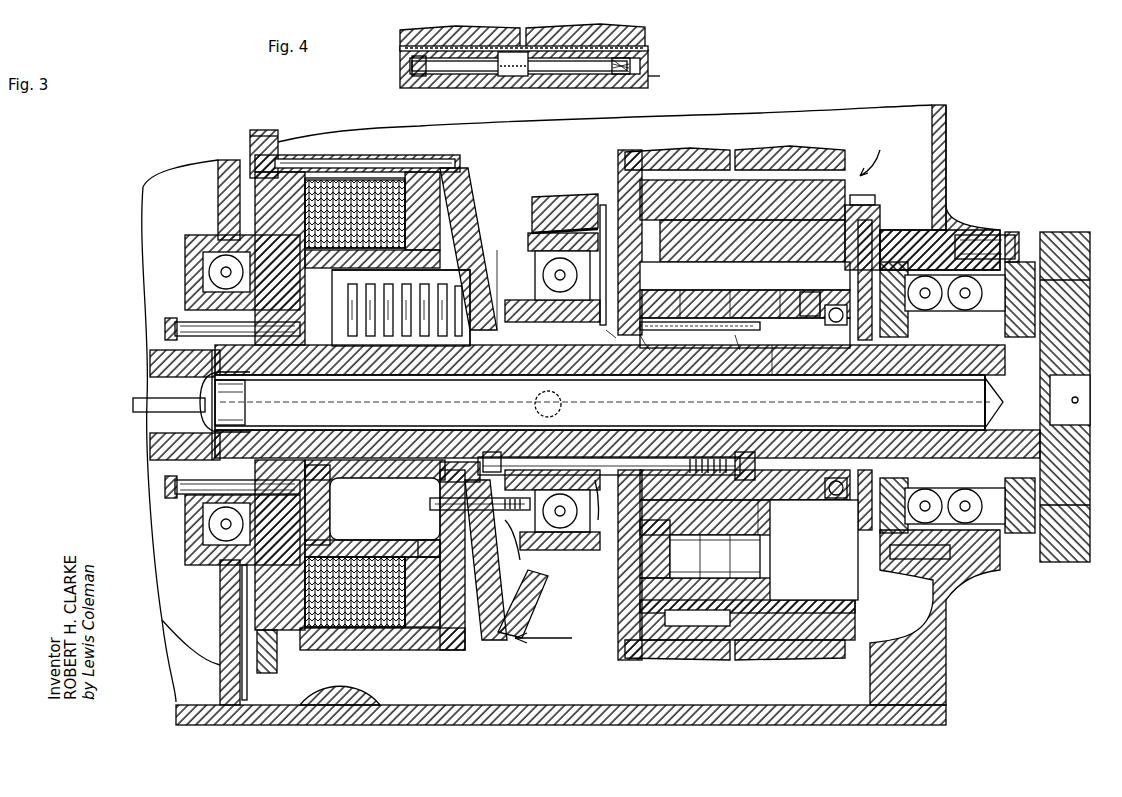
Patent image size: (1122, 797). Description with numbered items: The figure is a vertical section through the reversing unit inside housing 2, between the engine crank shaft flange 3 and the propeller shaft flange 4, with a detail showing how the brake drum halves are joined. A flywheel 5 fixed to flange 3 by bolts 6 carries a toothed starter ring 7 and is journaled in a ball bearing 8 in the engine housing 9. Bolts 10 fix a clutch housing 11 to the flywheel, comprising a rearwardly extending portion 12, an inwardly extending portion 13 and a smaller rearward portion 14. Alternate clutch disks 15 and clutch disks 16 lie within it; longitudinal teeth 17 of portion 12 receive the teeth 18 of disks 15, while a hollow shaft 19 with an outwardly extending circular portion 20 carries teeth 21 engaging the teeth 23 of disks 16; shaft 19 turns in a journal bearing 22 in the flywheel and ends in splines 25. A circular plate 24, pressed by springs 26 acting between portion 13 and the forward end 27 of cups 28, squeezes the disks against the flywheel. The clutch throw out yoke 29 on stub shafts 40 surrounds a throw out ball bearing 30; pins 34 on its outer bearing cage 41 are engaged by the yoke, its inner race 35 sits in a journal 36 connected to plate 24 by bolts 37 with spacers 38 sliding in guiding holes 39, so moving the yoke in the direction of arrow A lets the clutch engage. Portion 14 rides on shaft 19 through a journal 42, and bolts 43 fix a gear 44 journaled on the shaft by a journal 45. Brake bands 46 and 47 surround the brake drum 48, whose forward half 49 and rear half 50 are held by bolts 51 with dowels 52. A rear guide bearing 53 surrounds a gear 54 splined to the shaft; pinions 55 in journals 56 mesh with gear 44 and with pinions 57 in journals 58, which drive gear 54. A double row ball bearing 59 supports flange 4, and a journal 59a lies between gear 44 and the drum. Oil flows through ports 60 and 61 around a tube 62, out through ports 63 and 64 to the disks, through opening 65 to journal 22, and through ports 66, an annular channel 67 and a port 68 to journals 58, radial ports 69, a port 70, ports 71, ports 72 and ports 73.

In FIG. 3, the housing 2 is at (606, 724).
In FIG. 3, the crank shaft flange 3 is at (152, 455).
In FIG. 3, the propeller shaft flange 4 is at (1062, 558).
In FIG. 3, the flywheel 5 is at (290, 648).
In FIG. 3, the bolts 6 is at (168, 326).
In FIG. 3, the toothed starter ring 7 is at (266, 131).
In FIG. 3, the ball bearing 8 is at (205, 540).
In FIG. 3, the engine housing 9 is at (218, 628).
In FIG. 3, the bolts 10 is at (436, 166).
In FIG. 3, the clutch housing 11 is at (470, 210).
In FIG. 3, the rearwardly extending portion 12 is at (425, 652).
In FIG. 3, the inwardly extending portion 13 is at (506, 565).
In FIG. 3, the rearwardly extending portion 14 is at (498, 300).
In FIG. 3, the clutch disks 15 is at (414, 640).
In FIG. 3, the clutch disks 16 is at (340, 560).
In FIG. 3, the longitudinal teeth 17 is at (345, 165).
In FIG. 3, the teeth 18 is at (376, 182).
In FIG. 3, the hollow shaft 19 is at (405, 470).
In FIG. 3, the outwardly extending circular portion 20 is at (376, 552).
In FIG. 3, the longitudinally extending teeth 21 is at (414, 552).
In FIG. 3, the journal bearing 22 is at (292, 440).
In FIG. 3, the teeth 23 is at (378, 256).
In FIG. 3, the circular plate 24 is at (448, 260).
In FIG. 3, the splines 25 is at (955, 445).
In FIG. 3, the springs 26 is at (458, 290).
In FIG. 3, the forward end 27 is at (350, 318).
In FIG. 3, the cups 28 is at (438, 375).
In FIG. 3, the clutch throw out yoke 29 is at (570, 198).
In FIG. 3, the clutch throw out ball bearing 30 is at (556, 552).
In FIG. 3, the pins 34 is at (565, 404).
In FIG. 3, the inner race 35 is at (590, 570).
In FIG. 3, the journal 36 is at (603, 290).
In FIG. 3, the bolts 37 is at (458, 508).
In FIG. 3, the spacers 38 is at (478, 492).
In FIG. 3, the guiding holes 39 is at (495, 508).
In FIG. 3, the stub shafts 40 is at (545, 390).
In FIG. 3, the outer bearing cage 41 is at (540, 238).
In FIG. 3, the journal 42 is at (622, 455).
In FIG. 3, the bolts 43 is at (500, 452).
In FIG. 3, the gear 44 is at (728, 345).
In FIG. 3, the journal 45 is at (774, 376).
In FIG. 4, the brake band 46 is at (486, 31).
In FIG. 3, the brake band 46 is at (722, 149).
In FIG. 4, the brake band 47 is at (622, 29).
In FIG. 3, the brake band 47 is at (765, 150).
In FIG. 4, the brake drum 48 is at (664, 76).
In FIG. 3, the brake drum 48 is at (881, 158).
In FIG. 4, the forward half 49 is at (402, 84).
In FIG. 3, the forward half 49 is at (620, 178).
In FIG. 4, the rear half 50 is at (595, 82).
In FIG. 3, the rear half 50 is at (850, 208).
In FIG. 4, the bolts 51 is at (466, 70).
In FIG. 4, the dowels 52 is at (514, 68).
In FIG. 3, the rear guide bearing 53 is at (864, 262).
In FIG. 3, the gear 54 is at (826, 470).
In FIG. 3, the pinions 55 is at (722, 545).
In FIG. 3, the journals 56 is at (642, 596).
In FIG. 3, the pinion 57 is at (748, 290).
In FIG. 3, the journals 58 is at (652, 292).
In FIG. 3, the double row ball bearing 59 is at (948, 262).
In FIG. 3, the journal 59a is at (612, 545).
In FIG. 3, the port 60 is at (200, 428).
In FIG. 3, the port 61 is at (244, 400).
In FIG. 3, the tube 62 is at (330, 430).
In FIG. 3, the port 63 is at (368, 370).
In FIG. 3, the port 64 is at (408, 273).
In FIG. 3, the opening 65 is at (210, 440).
In FIG. 3, the ports 66 is at (650, 345).
In FIG. 3, the annular channel 67 is at (618, 332).
In FIG. 3, the port 68 is at (650, 330).
In FIG. 3, the radial ports 69 is at (710, 290).
In FIG. 3, the port 70 is at (660, 535).
In FIG. 3, the ports 71 is at (748, 540).
In FIG. 3, the ports 72 is at (760, 545).
In FIG. 3, the ports 73 is at (812, 292).
In FIG. 3, the arrow A is at (543, 646).